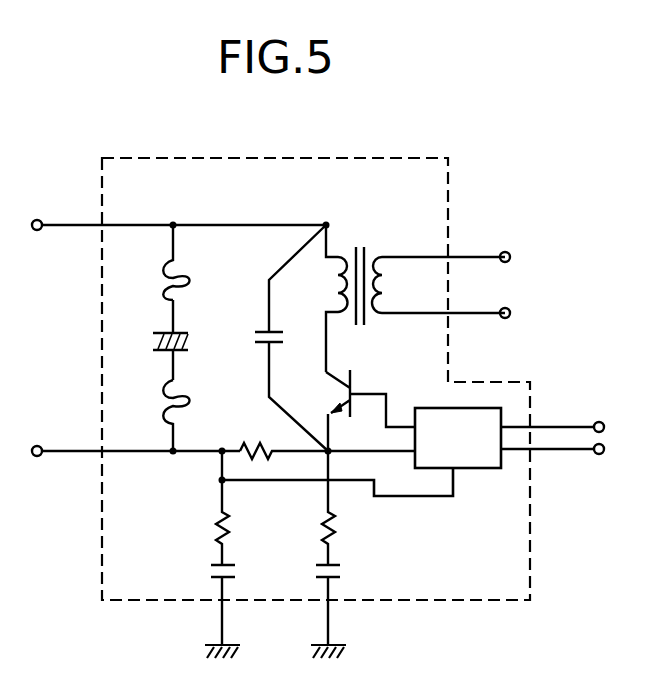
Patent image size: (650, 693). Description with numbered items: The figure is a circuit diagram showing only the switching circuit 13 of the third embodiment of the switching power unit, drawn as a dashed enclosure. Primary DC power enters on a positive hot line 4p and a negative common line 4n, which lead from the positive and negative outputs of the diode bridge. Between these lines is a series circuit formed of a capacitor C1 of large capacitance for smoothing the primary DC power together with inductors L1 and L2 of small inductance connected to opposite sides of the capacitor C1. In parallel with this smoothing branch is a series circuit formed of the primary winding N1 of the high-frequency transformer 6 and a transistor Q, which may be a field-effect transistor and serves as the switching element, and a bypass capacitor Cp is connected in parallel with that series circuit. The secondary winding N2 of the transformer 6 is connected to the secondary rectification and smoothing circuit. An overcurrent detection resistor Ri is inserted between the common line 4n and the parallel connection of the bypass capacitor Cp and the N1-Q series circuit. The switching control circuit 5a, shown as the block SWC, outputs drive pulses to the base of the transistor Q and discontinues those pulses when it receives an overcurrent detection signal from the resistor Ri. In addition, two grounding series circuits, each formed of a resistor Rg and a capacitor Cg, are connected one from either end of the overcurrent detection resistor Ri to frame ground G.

The switching circuit 13 is at (288, 157).
The positive hot line 4p is at (77, 224).
The negative common line 4n is at (72, 453).
The high-frequency transformer 6 is at (399, 286).
The switching control circuit 5a is at (413, 473).
The inductor L1 is at (156, 262).
The capacitor C1 is at (155, 340).
The inductor L2 is at (156, 415).
The overcurrent detection resistor Ri is at (283, 434).
The bypass capacitor Cp is at (291, 338).
The primary winding N1 is at (303, 292).
The secondary winding N2 is at (410, 292).
The transistor Q is at (360, 410).
The switching control circuit SWC is at (475, 468).
The resistor Rg is at (255, 508).
The capacitor Cg is at (257, 600).
The frame ground G is at (288, 648).